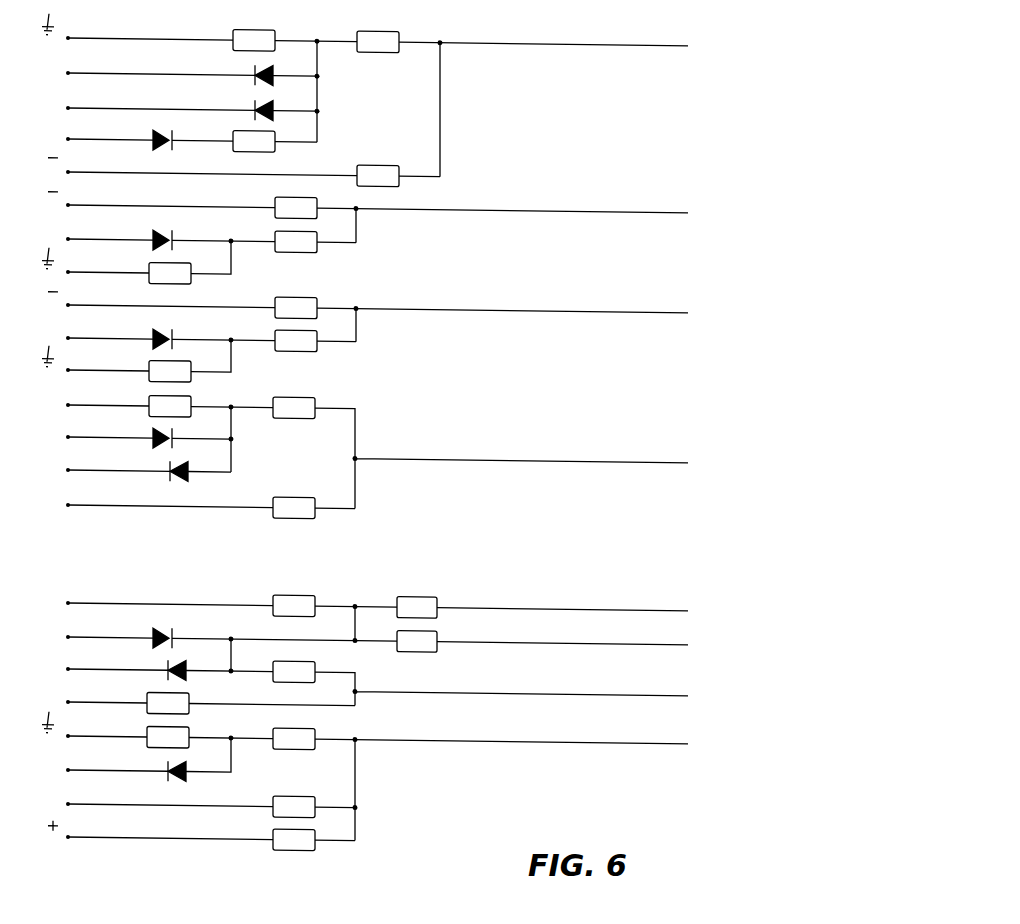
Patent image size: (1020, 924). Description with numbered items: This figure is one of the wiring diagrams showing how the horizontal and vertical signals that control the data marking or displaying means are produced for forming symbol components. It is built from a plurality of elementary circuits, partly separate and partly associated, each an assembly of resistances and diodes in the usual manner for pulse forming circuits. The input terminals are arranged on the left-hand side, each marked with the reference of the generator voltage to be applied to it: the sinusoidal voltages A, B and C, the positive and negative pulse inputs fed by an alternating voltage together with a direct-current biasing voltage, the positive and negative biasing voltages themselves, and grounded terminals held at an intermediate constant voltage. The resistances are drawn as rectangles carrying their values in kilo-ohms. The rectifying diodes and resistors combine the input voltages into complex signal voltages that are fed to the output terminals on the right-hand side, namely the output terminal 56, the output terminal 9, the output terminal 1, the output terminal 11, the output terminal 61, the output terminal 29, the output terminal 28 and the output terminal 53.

The output terminal 56 is at (388, 102).
The output terminal 9 is at (378, 238).
The output terminal 1 is at (379, 340).
The output terminal 11 is at (384, 451).
The output terminal 61 is at (384, 602).
The output terminal 29 is at (383, 632).
The output terminal 28 is at (383, 679).
The output terminal 53 is at (384, 784).